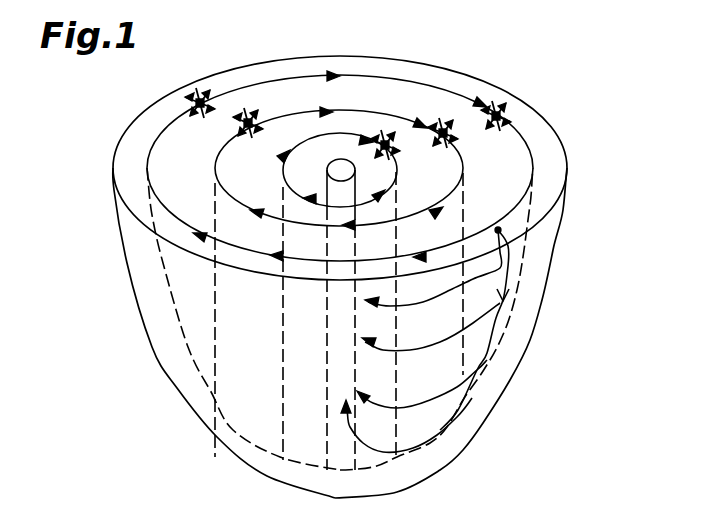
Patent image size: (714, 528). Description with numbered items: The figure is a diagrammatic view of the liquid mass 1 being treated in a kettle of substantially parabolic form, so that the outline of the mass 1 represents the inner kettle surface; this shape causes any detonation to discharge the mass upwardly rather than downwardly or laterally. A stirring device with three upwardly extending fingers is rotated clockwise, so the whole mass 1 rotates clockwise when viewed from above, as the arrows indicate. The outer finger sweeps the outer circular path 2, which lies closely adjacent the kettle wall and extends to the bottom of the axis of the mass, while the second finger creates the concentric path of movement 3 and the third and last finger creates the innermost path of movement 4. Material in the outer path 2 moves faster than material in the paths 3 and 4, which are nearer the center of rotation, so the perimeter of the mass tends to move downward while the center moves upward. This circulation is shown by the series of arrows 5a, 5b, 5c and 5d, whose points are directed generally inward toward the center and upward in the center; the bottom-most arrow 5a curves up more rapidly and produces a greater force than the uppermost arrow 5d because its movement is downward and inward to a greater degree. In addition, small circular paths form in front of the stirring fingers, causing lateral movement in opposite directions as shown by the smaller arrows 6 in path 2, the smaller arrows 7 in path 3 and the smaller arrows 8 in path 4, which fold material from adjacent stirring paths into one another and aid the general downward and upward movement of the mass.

The liquid mass 1 is at (555, 249).
The outer circular path 2 is at (533, 160).
The second circular path of movement 3 is at (464, 167).
The third path of movement 4 is at (393, 168).
The bottom-most arrow 5a is at (385, 450).
The arrow 5b is at (405, 407).
The arrow 5c is at (407, 350).
The uppermost arrow 5d is at (404, 305).
The smaller arrows in path 2 6 is at (351, 122).
The smaller arrows in path 3 7 is at (353, 122).
The smaller arrows in path 4 8 is at (393, 145).